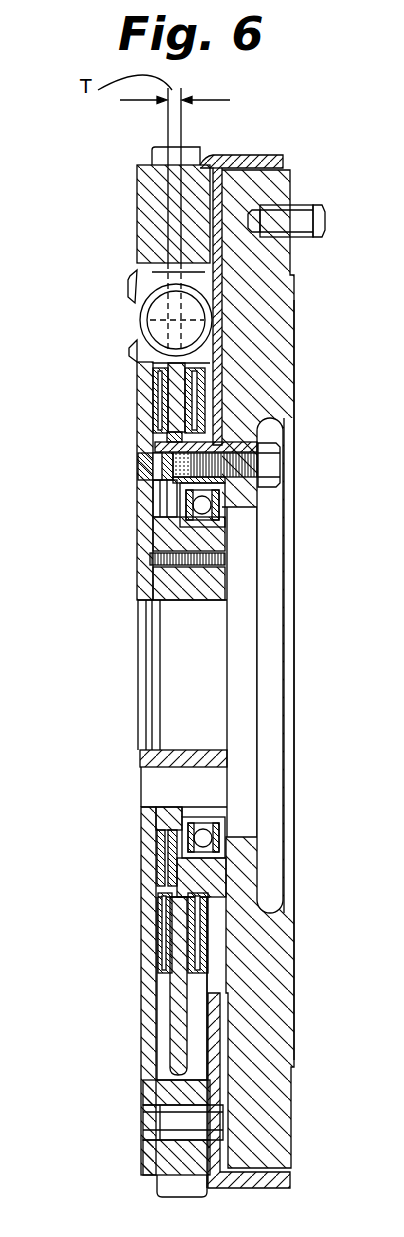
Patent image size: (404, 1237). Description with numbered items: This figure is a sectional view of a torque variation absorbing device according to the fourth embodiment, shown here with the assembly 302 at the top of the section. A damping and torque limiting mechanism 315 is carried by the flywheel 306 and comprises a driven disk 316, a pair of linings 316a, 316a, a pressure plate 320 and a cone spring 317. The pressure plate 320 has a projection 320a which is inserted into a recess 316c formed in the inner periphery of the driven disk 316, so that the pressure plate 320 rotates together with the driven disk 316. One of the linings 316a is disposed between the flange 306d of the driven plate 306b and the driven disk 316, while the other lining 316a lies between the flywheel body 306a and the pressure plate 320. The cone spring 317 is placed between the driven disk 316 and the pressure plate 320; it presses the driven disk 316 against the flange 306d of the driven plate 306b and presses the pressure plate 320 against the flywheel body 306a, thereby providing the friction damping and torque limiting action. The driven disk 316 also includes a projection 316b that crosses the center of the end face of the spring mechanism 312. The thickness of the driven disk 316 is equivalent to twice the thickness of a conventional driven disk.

The tool holder body 302 is at (130, 183).
The flywheel 306 is at (305, 290).
The flywheel body 306a is at (277, 345).
The driven plate 306b is at (193, 871).
The flange 306d is at (167, 908).
The spring mechanism 312 is at (130, 310).
The damping and torque limiting mechanism 315 is at (127, 408).
The driven disk 316 is at (152, 385).
The linings 316a is at (170, 953).
The projection 316b is at (145, 328).
The recess 316c is at (165, 427).
The cone spring 317 is at (190, 928).
The pressure plate 320 is at (197, 432).
The projection 320a is at (148, 447).